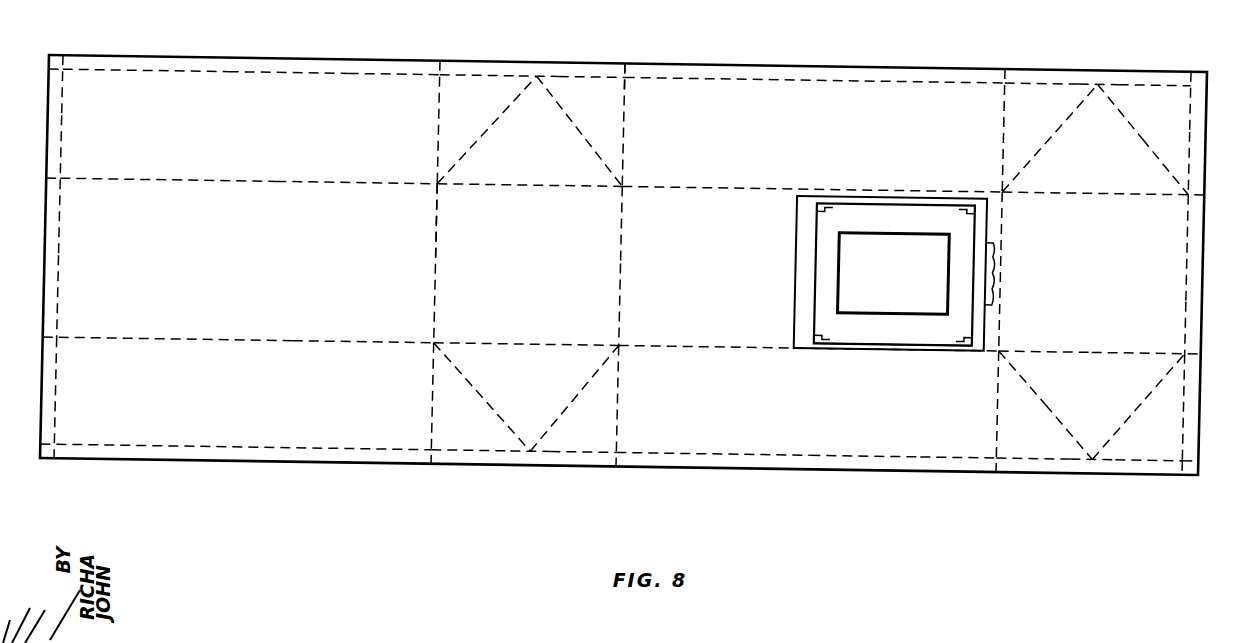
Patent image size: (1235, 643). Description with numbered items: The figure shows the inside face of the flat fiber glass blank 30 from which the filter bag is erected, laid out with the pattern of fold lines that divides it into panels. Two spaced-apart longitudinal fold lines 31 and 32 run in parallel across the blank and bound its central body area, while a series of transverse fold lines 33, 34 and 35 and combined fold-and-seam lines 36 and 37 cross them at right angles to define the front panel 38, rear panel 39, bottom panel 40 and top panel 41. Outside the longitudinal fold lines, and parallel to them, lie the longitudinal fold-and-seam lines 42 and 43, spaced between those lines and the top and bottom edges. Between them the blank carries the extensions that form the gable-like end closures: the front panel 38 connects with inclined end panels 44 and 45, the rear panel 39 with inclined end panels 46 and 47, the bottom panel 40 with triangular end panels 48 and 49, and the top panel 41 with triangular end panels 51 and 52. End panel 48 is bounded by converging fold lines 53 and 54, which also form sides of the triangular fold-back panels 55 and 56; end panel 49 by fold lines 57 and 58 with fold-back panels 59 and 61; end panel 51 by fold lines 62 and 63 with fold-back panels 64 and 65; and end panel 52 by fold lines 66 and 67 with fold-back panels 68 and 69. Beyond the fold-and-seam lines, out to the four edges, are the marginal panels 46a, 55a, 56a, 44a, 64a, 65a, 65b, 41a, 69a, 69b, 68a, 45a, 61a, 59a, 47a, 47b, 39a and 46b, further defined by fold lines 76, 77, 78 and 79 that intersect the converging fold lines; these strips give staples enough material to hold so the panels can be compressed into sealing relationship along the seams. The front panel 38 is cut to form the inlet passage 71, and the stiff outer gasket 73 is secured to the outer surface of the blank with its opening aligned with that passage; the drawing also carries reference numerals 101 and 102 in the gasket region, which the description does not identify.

The blank 30 is at (694, 509).
The longitudinal fold line 31 is at (272, 183).
The longitudinal fold line 32 is at (187, 343).
The transverse fold line 33 is at (437, 243).
The transverse fold line 34 is at (622, 250).
The transverse fold line 35 is at (1003, 258).
The fold-and-seam line 36 is at (63, 235).
The fold-and-seam line 37 is at (1190, 262).
The front panel 38 is at (682, 190).
The rear panel 39 is at (170, 183).
The marginal panel 39a is at (58, 272).
The bottom panel 40 is at (622, 275).
The top panel 41 is at (1048, 353).
The marginal panel 41a is at (1190, 293).
The longitudinal fold-and-seam line 42 is at (355, 72).
The longitudinal fold-and-seam line 43 is at (935, 458).
The inclined end panel 44 is at (715, 73).
The marginal panel 44a is at (812, 75).
The inclined end panel 45 is at (755, 467).
The marginal panel 45a is at (832, 467).
The inclined end panel 46 is at (137, 72).
The marginal panel 46a is at (228, 72).
The marginal panel 46b is at (63, 118).
The inclined end panel 47 is at (305, 343).
The marginal panel 47a is at (195, 461).
The marginal panel 47b is at (56, 398).
The triangular end panel 48 is at (530, 185).
The triangular end panel 49 is at (540, 345).
The triangular end panel 51 is at (1090, 193).
The triangular end panel 52 is at (1120, 355).
The fold line 53 is at (506, 116).
The fold line 54 is at (598, 153).
The triangular fold-back panel 55 is at (440, 125).
The marginal panel 55a is at (507, 72).
The triangular fold-back panel 56 is at (624, 125).
The marginal panel 56a is at (597, 72).
The fold line 57 is at (462, 375).
The fold line 58 is at (594, 375).
The triangular fold-back panel 59 is at (435, 405).
The marginal panel 59a is at (475, 464).
The triangular fold-back panel 61 is at (616, 405).
The marginal panel 61a is at (598, 464).
The fold line 62 is at (1034, 156).
The fold line 63 is at (1162, 168).
The triangular fold-back panel 64 is at (1003, 130).
The marginal panel 64a is at (1048, 80).
The triangular fold-back panel 65 is at (1126, 118).
The marginal panel 65a is at (1162, 80).
The marginal panel 65b is at (1190, 135).
The fold line 66 is at (1043, 403).
The fold line 67 is at (1158, 380).
The triangular fold-back panel 68 is at (1050, 425).
The marginal panel 68a is at (1038, 471).
The triangular fold-back panel 69 is at (1145, 471).
The marginal panel 69a is at (1183, 433).
The marginal panel 69b is at (1165, 471).
The inlet passage 71 is at (878, 243).
The outer gasket 73 is at (797, 258).
The fold line 76 is at (540, 78).
The fold line 77 is at (1100, 85).
The fold line 78 is at (1092, 466).
The fold line 79 is at (530, 464).
The frame bottom edge 101 is at (882, 347).
The window opening 102 is at (882, 318).